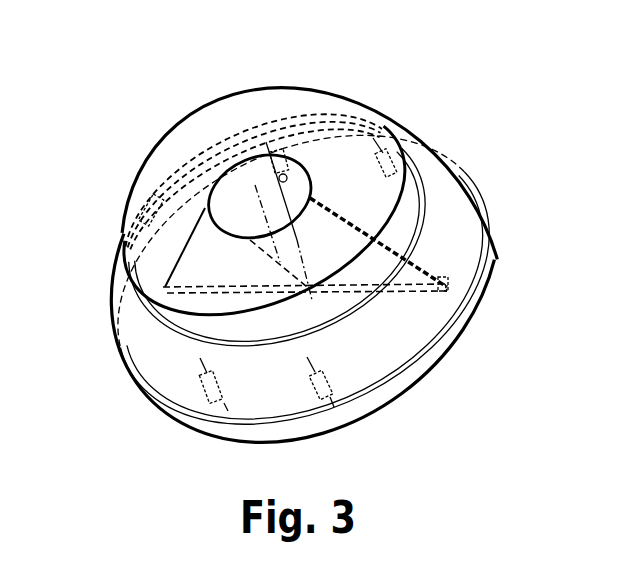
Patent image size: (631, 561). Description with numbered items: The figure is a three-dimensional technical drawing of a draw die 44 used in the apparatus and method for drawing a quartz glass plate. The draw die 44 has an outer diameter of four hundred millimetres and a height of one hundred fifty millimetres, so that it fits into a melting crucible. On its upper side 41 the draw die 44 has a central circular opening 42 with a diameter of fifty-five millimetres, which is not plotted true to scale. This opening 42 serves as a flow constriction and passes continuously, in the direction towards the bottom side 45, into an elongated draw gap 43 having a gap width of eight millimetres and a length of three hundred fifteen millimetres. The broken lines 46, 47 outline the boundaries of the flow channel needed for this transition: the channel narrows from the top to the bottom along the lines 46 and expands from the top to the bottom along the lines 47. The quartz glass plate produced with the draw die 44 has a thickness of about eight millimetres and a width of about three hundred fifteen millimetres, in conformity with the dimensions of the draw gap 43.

The upper side 41 is at (309, 134).
The central circular opening 42 is at (232, 193).
The draw gap 43 is at (340, 275).
The draw die 44 is at (133, 408).
The bottom side 45 is at (302, 369).
The broken lines 46 is at (258, 256).
The broken lines 47 is at (187, 247).